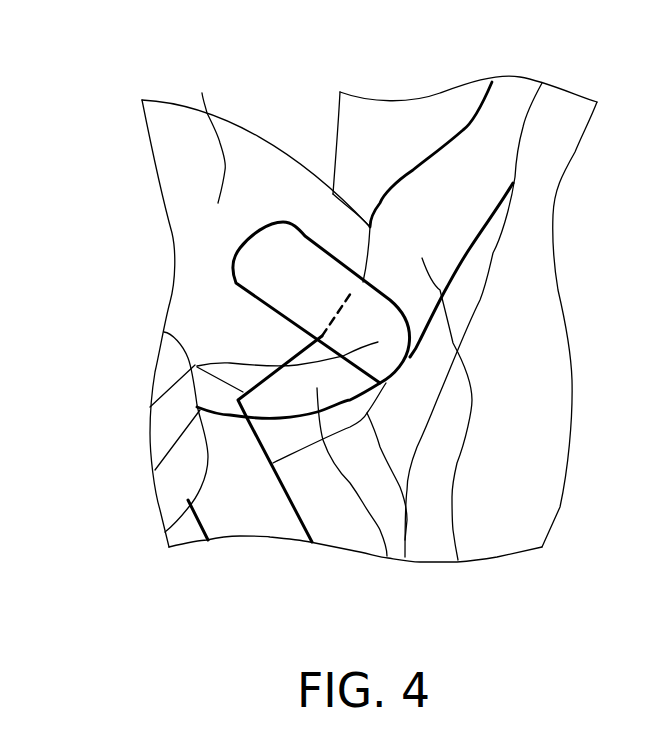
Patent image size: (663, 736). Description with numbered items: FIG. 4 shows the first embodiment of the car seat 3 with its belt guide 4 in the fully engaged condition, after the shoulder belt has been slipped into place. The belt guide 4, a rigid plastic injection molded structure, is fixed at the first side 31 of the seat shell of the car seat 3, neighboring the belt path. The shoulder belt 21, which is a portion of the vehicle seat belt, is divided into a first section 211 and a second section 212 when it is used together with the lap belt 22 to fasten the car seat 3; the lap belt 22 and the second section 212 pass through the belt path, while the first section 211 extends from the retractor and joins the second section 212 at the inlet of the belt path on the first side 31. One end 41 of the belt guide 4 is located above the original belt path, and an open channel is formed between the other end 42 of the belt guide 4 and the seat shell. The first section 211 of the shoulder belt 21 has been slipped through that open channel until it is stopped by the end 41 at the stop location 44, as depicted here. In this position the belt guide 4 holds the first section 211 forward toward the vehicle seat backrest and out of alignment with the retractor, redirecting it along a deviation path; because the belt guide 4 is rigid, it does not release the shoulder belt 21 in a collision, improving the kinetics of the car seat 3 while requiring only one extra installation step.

The car seat 3 is at (104, 50).
The first side 31 is at (202, 93).
The belt guide 4 is at (322, 248).
The end 41 is at (273, 255).
The other end 42 is at (197, 366).
The stop location 44 is at (320, 313).
The shoulder belt 21 is at (487, 602).
The first section 211 is at (458, 560).
The second section 212 is at (387, 556).
The lap belt 22 is at (242, 523).